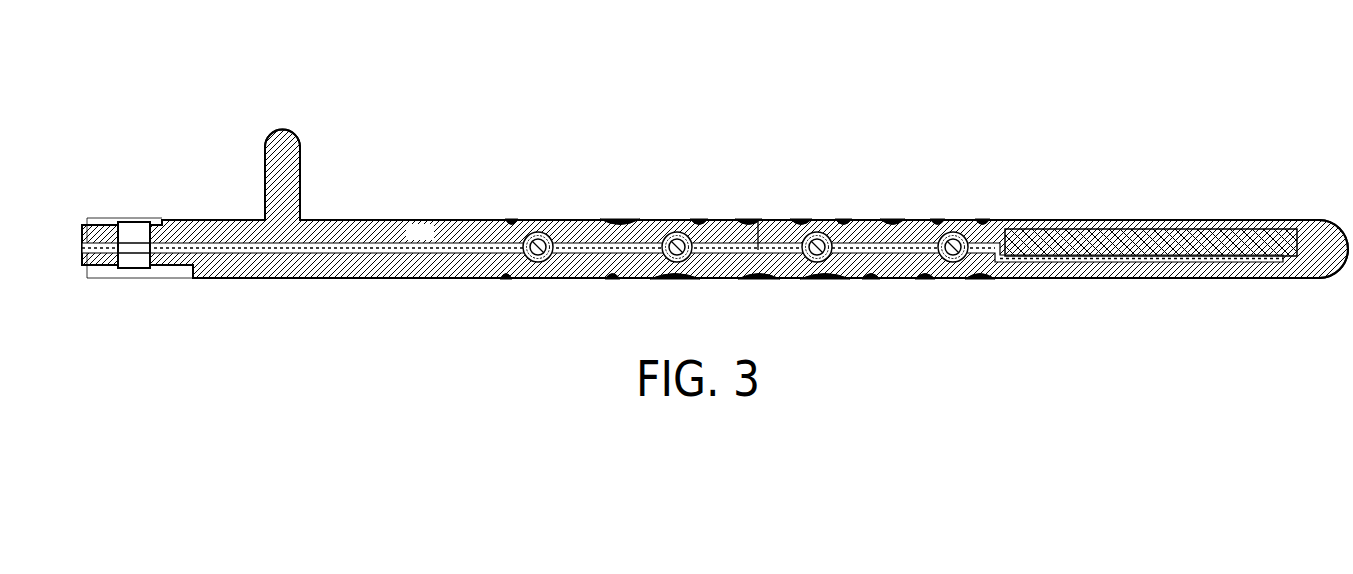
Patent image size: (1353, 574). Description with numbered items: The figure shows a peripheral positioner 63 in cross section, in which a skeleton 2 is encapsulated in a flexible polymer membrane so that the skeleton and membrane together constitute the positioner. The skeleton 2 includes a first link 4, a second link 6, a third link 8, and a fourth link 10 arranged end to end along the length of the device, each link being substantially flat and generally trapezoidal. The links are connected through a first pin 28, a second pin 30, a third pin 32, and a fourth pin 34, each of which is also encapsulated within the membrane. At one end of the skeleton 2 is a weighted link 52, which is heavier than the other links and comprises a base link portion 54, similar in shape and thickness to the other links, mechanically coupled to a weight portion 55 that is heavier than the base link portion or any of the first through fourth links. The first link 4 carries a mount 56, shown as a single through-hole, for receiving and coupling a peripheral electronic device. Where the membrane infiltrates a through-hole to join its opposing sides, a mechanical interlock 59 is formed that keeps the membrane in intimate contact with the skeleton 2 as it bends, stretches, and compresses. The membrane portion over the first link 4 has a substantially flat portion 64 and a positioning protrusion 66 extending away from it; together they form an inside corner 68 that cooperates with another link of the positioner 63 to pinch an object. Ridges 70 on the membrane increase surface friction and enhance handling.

The peripheral positioner 63 is at (715, 211).
The skeleton 2 is at (715, 229).
The first link 4 is at (474, 238).
The second link 6 is at (582, 238).
The third link 8 is at (736, 240).
The fourth link 10 is at (913, 238).
The first pin 28 is at (538, 252).
The second pin 30 is at (677, 252).
The third pin 32 is at (817, 252).
The fourth pin 34 is at (953, 252).
The weighted link 52 is at (1176, 234).
The base link portion 54 is at (1094, 277).
The weight portion 55 is at (1097, 228).
The mount 56 is at (128, 208).
The mechanical interlock 59 is at (758, 222).
The substantially flat portion 64 is at (361, 219).
The positioning protrusion 66 is at (297, 150).
The inside corner 68 is at (300, 214).
The ridges 70 is at (628, 221).